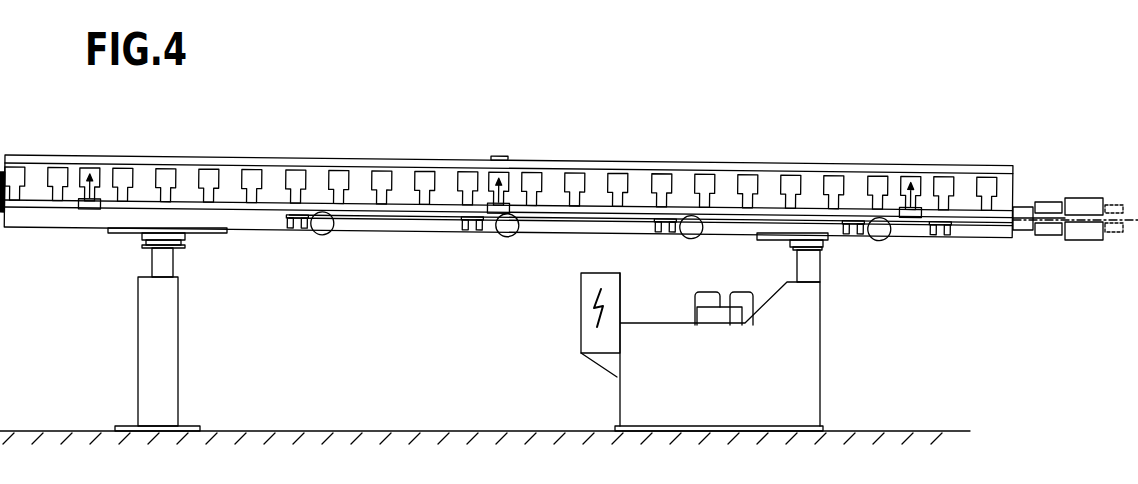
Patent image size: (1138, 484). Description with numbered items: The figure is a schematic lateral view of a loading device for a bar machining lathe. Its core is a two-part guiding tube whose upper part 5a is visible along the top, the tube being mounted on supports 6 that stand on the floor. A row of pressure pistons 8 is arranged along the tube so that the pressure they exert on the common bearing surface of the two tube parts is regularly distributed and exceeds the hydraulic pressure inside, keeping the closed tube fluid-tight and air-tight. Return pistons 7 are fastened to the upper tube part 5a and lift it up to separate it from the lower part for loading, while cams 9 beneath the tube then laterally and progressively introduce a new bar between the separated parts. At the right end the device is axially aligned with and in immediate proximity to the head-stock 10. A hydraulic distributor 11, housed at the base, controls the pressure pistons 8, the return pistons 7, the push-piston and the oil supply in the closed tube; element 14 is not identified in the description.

The upper tube part 5a is at (263, 206).
The supports 6 is at (153, 337).
The return pistons 7 is at (97, 170).
The pressure pistons 8 is at (62, 178).
The cams 9 is at (325, 225).
The head-stock 10 is at (1083, 198).
The hydraulic distributor 11 is at (793, 367).
The guide rail 14 is at (410, 219).